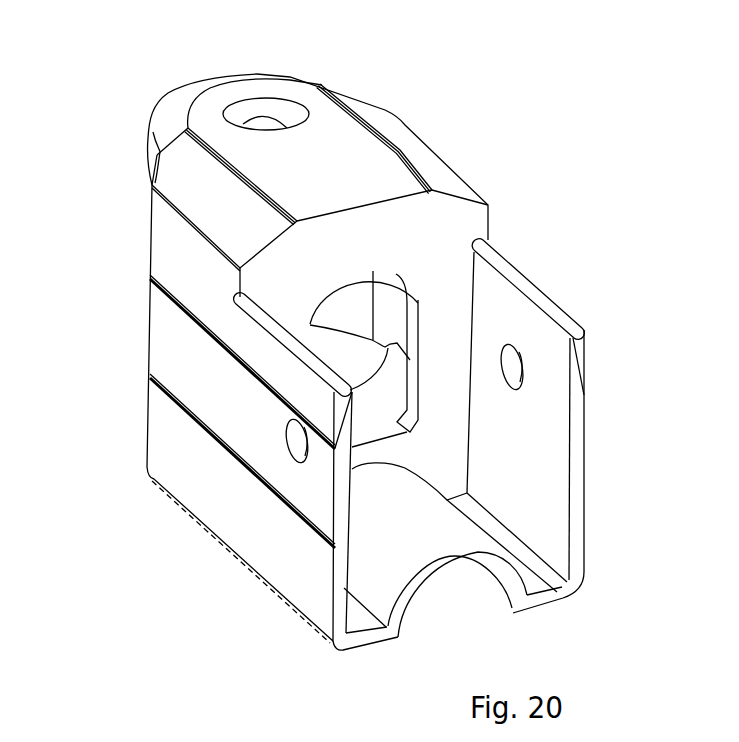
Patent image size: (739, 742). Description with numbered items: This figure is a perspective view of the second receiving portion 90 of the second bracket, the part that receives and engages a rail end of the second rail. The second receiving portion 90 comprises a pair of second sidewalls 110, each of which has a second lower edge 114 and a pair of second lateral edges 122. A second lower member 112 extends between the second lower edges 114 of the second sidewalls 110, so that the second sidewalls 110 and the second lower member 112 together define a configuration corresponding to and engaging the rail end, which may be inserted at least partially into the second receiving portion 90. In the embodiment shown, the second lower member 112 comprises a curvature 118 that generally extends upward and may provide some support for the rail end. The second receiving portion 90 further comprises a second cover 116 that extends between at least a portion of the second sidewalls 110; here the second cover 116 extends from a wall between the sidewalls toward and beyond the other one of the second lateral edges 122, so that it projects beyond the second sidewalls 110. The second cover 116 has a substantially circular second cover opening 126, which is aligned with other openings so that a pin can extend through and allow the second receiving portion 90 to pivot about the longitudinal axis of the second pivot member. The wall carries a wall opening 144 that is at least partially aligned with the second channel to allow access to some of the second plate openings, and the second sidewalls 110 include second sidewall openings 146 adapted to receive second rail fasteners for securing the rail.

The second receiving portion 90 is at (558, 100).
The second sidewalls 110 is at (197, 446).
The second lower member 112 is at (543, 598).
The second lower edge 114 is at (228, 540).
The second cover 116 is at (355, 152).
The curvature 118 is at (443, 568).
The second lateral edges 122 is at (152, 243).
The second cover opening 126 is at (253, 107).
The wall opening 144 is at (415, 327).
The second sidewall openings 146 is at (518, 357).